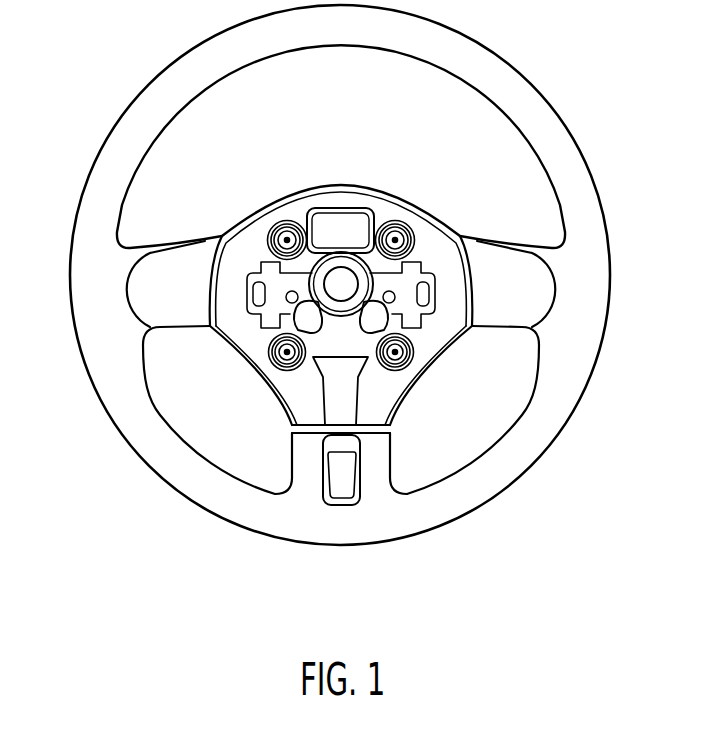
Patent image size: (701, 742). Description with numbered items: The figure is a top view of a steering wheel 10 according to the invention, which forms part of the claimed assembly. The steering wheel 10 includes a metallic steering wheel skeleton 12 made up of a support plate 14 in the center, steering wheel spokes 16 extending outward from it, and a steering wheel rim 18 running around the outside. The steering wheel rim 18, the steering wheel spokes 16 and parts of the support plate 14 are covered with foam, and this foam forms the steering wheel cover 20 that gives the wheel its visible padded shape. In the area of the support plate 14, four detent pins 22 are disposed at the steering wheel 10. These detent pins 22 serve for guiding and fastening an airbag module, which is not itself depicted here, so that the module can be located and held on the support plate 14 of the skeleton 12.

The steering wheel 10 is at (543, 84).
The steering wheel skeleton 12 is at (222, 222).
The support plate 14 is at (400, 381).
The steering wheel spokes 16 is at (508, 255).
The steering wheel rim 18 is at (522, 460).
The steering wheel cover 20 is at (180, 316).
The detent pins 22 is at (282, 221).